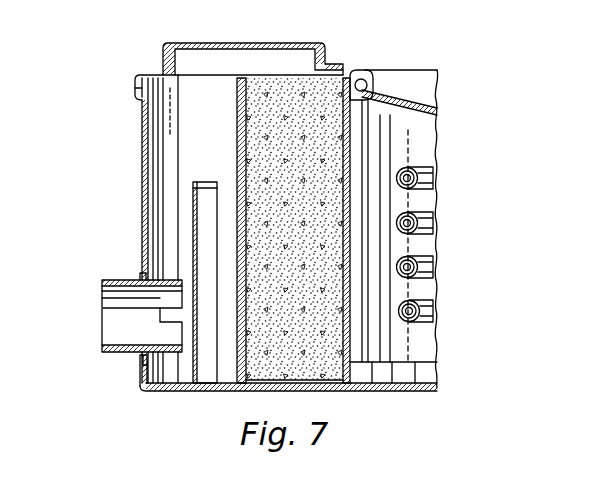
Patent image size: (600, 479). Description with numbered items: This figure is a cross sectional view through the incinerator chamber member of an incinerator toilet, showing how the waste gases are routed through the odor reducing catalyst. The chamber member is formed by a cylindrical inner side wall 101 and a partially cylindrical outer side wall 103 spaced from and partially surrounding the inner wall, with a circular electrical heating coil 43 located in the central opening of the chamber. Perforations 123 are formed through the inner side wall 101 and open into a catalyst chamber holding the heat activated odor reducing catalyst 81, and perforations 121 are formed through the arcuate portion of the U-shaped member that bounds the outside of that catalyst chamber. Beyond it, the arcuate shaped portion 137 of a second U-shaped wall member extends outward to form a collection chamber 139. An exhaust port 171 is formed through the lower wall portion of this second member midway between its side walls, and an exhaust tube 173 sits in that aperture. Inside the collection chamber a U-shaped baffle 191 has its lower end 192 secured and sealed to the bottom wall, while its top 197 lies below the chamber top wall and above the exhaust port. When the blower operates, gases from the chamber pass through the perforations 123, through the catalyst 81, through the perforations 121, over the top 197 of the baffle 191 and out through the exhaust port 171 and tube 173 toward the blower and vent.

The heat activated odor reducing catalyst 81 is at (318, 43).
The collection chamber 139 is at (182, 133).
The arcuate shaped portion 137 is at (148, 176).
The top of the baffle 197 is at (203, 182).
The U-shaped baffle 191 is at (195, 247).
The perforations 121 is at (238, 116).
The outer side wall 103 is at (240, 114).
The perforations 123 is at (350, 135).
The inner side wall 101 is at (350, 157).
The electrical heating coil 43 is at (403, 206).
The exhaust port 171 is at (145, 278).
The exhaust tube 173 is at (118, 355).
The lower end of the baffle 192 is at (172, 368).